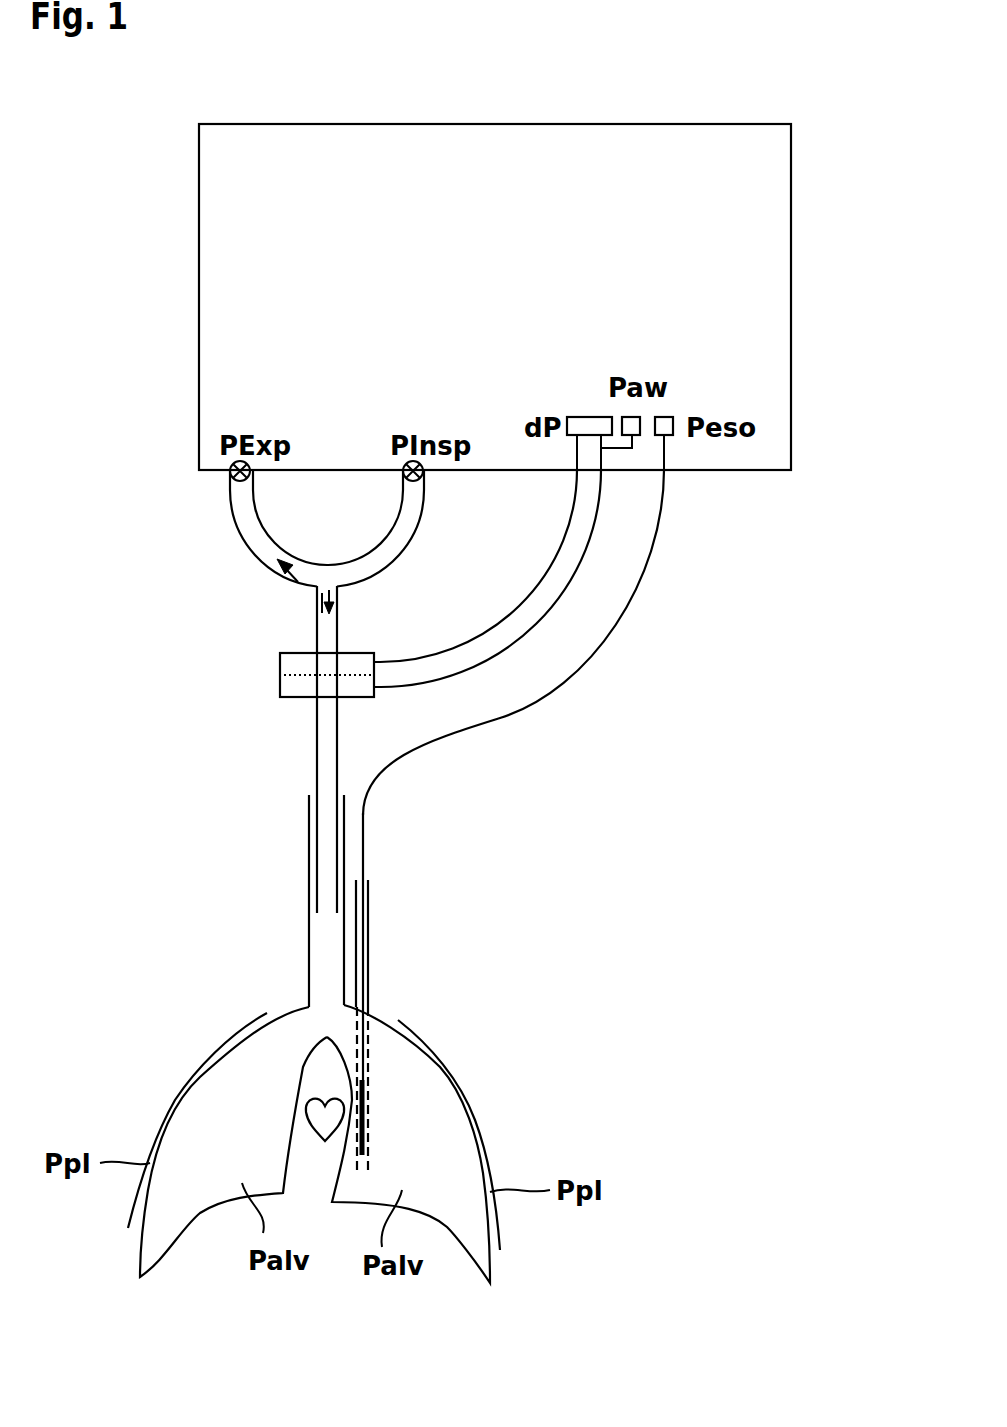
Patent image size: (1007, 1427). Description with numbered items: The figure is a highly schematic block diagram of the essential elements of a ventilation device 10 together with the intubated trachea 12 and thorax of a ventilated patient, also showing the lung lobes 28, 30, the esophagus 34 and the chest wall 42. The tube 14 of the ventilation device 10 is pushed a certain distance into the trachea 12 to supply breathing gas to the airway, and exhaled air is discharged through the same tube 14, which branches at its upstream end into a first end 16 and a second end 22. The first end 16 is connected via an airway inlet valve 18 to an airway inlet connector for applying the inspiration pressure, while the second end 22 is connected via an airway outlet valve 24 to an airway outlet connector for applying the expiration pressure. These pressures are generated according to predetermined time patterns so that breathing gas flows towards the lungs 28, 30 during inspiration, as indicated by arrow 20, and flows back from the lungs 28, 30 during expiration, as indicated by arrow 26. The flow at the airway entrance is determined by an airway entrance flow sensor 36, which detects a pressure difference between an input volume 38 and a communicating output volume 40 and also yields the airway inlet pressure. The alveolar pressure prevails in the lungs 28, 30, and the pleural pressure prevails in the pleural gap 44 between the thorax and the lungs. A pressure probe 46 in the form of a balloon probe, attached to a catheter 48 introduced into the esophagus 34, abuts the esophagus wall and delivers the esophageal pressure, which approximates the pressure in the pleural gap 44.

The ventilation device 10 is at (748, 89).
The trachea 12 is at (308, 930).
The tube 14 is at (318, 763).
The first end 16 is at (398, 532).
The airway inlet valve 18 is at (424, 481).
The arrow 20 is at (363, 577).
The second end 22 is at (255, 532).
The airway outlet valve 24 is at (230, 481).
The arrow 26 is at (297, 583).
The lung lobe 28 is at (182, 1208).
The lung lobe 30 is at (455, 1223).
The esophagus 34 is at (368, 937).
The airway entrance flow sensor 36 is at (192, 633).
The input volume 38 is at (280, 660).
The output volume 40 is at (280, 690).
The chest wall 42 is at (210, 1055).
The pleural gap 44 is at (133, 1214).
The pressure probe 46 is at (368, 1117).
The catheter 48 is at (573, 672).